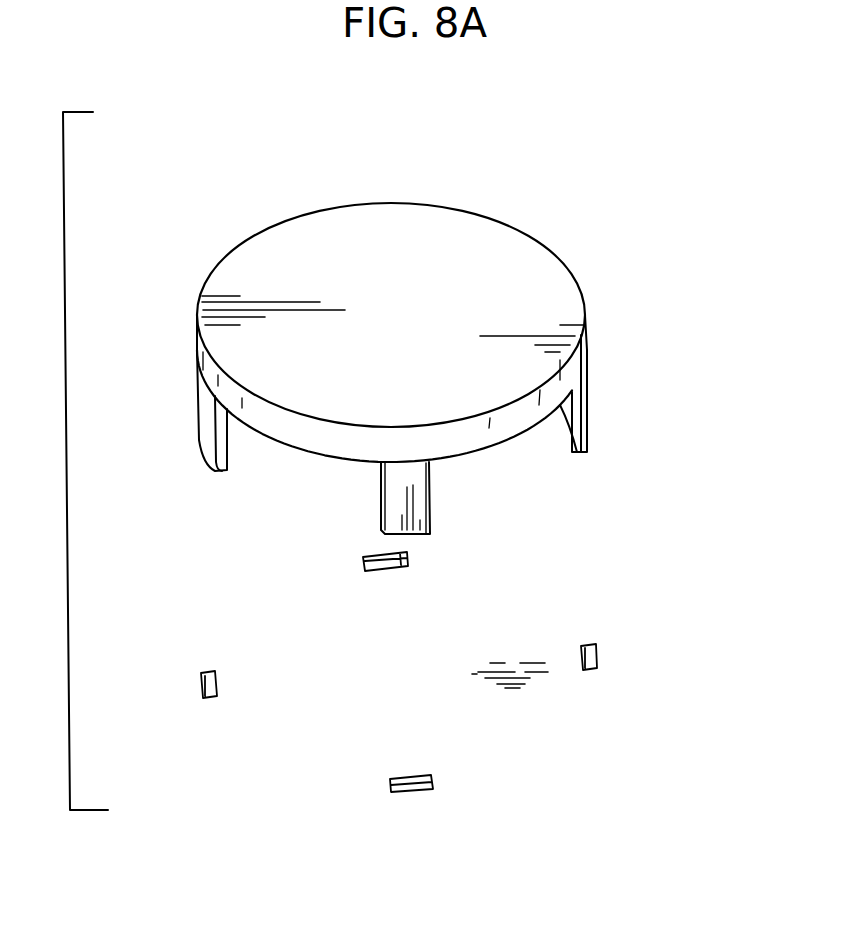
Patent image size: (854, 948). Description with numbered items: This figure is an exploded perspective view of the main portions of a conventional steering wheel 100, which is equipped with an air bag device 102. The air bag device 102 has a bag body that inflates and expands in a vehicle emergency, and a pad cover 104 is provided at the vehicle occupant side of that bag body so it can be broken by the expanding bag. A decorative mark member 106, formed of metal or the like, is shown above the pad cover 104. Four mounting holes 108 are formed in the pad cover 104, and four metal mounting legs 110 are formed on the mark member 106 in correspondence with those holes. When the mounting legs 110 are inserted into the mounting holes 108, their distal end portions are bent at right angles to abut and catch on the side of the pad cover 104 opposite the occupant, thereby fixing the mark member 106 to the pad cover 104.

The steering wheel 100 is at (400, 315).
The air bag device 102 is at (601, 590).
The pad cover 104 is at (512, 672).
The mark member 106 is at (518, 223).
The mounting holes 108 is at (396, 571).
The mounting legs 110 is at (208, 443).